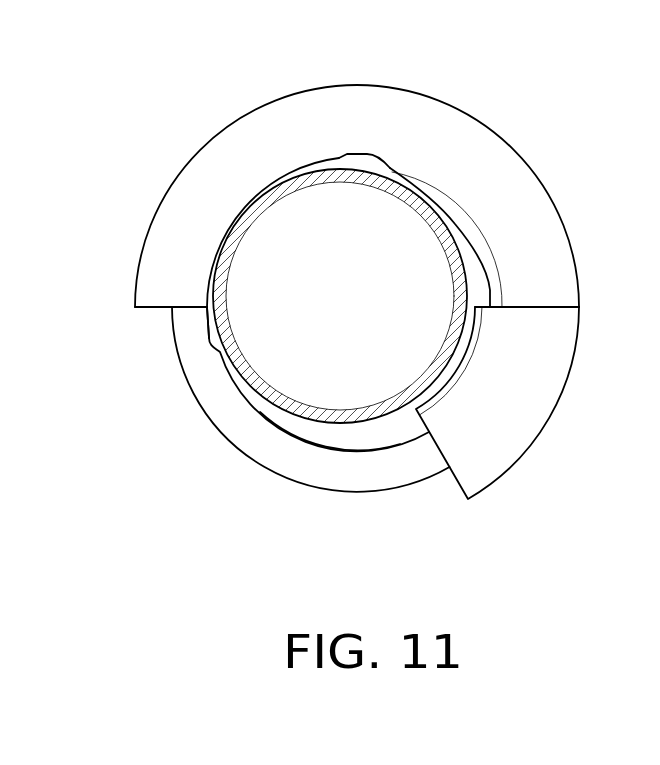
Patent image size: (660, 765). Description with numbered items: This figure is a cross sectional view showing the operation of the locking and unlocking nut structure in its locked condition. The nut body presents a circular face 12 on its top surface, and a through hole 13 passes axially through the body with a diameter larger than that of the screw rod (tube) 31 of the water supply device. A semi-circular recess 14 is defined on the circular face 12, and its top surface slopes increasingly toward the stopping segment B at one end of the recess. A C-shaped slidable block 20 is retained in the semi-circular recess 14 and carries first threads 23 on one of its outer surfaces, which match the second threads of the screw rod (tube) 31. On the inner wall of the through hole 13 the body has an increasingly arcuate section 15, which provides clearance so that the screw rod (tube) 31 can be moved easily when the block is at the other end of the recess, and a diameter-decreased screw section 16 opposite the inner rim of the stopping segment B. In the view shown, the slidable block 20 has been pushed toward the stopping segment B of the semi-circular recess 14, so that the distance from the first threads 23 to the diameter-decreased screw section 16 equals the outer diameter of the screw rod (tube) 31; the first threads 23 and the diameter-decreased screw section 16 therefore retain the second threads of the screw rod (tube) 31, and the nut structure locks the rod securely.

The circular face 12 is at (197, 185).
The through hole 13 is at (385, 437).
The semi-circular recess 14 is at (237, 442).
The arcuate section 15 is at (343, 163).
The diameter-decreased screw section 16 is at (485, 252).
The slidable block 20 is at (560, 333).
The first threads 23 is at (462, 373).
The screw rod (tube) 31 is at (312, 413).
The stopping segment B is at (183, 313).